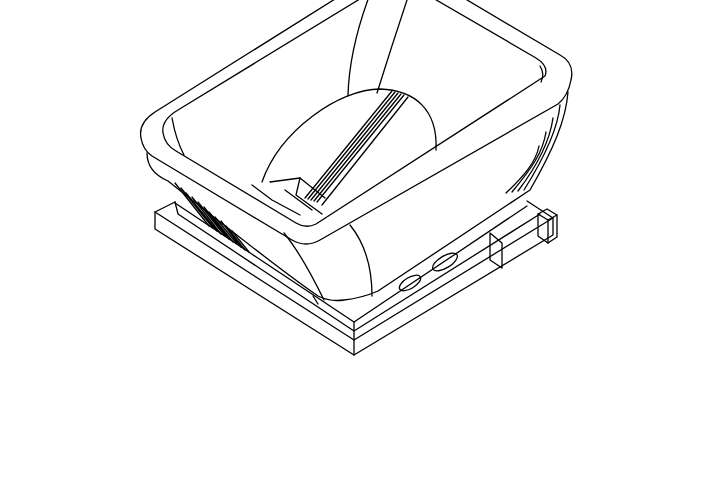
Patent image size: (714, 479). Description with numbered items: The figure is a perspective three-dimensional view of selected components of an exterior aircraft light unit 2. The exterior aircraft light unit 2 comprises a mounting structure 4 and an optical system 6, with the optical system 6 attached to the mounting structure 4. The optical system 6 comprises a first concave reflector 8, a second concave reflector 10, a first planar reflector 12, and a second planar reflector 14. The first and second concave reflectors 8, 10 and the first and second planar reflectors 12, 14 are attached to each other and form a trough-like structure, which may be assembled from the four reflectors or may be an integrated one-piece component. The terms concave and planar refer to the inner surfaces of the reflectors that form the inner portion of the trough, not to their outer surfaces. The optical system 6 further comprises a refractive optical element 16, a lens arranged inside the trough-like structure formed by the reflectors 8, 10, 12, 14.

The exterior aircraft light unit 2 is at (107, 213).
The mounting structure 4 is at (530, 203).
The optical system 6 is at (203, 62).
The first concave reflector 8 is at (313, 94).
The second concave reflector 10 is at (450, 238).
The first planar reflector 12 is at (418, 67).
The second planar reflector 14 is at (238, 232).
The refractive optical element 16 is at (371, 165).